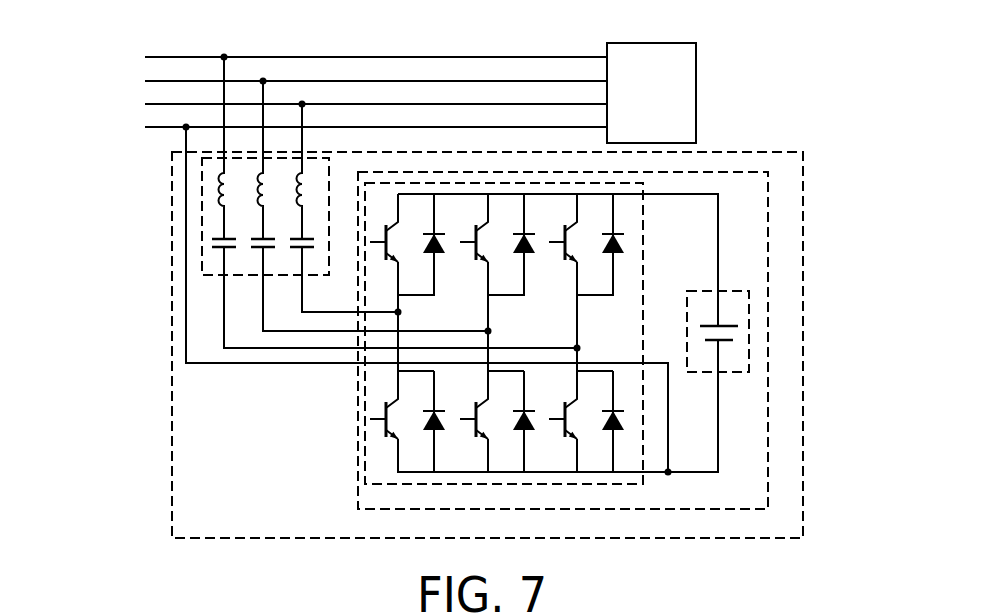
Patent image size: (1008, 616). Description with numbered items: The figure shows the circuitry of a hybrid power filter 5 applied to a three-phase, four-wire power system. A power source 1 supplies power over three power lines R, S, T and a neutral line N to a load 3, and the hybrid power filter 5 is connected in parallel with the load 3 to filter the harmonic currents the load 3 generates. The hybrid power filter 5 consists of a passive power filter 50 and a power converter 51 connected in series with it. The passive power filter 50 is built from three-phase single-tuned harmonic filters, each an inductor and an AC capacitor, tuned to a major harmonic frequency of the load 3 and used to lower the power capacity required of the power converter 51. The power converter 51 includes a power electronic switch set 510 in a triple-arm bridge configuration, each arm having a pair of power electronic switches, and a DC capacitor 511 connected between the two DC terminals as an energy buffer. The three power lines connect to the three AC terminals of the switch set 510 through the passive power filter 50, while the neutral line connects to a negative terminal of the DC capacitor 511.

The power source 1 is at (102, 53).
The load 3 is at (683, 94).
The hybrid power filter 5 is at (795, 428).
The passive power filter 50 is at (207, 222).
The power converter 51 is at (762, 395).
The power electronic switch set 510 is at (370, 447).
The DC capacitor 511 is at (745, 317).